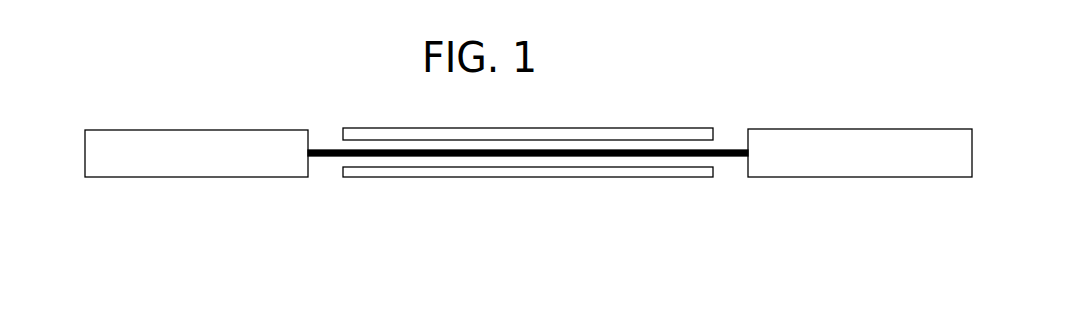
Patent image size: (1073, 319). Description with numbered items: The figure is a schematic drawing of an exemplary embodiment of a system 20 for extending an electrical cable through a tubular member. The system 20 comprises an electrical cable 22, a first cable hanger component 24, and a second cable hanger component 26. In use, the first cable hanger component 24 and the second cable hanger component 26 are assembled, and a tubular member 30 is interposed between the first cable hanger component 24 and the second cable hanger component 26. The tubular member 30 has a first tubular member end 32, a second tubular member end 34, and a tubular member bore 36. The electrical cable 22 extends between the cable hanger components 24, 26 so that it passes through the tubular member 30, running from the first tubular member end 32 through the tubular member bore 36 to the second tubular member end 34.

The system 20 is at (944, 102).
The electrical cable 22 is at (332, 149).
The first cable hanger component 24 is at (222, 129).
The second cable hanger component 26 is at (824, 129).
The tubular member 30 is at (600, 128).
The first tubular member end 32 is at (343, 183).
The second tubular member end 34 is at (713, 181).
The tubular member bore 36 is at (598, 162).